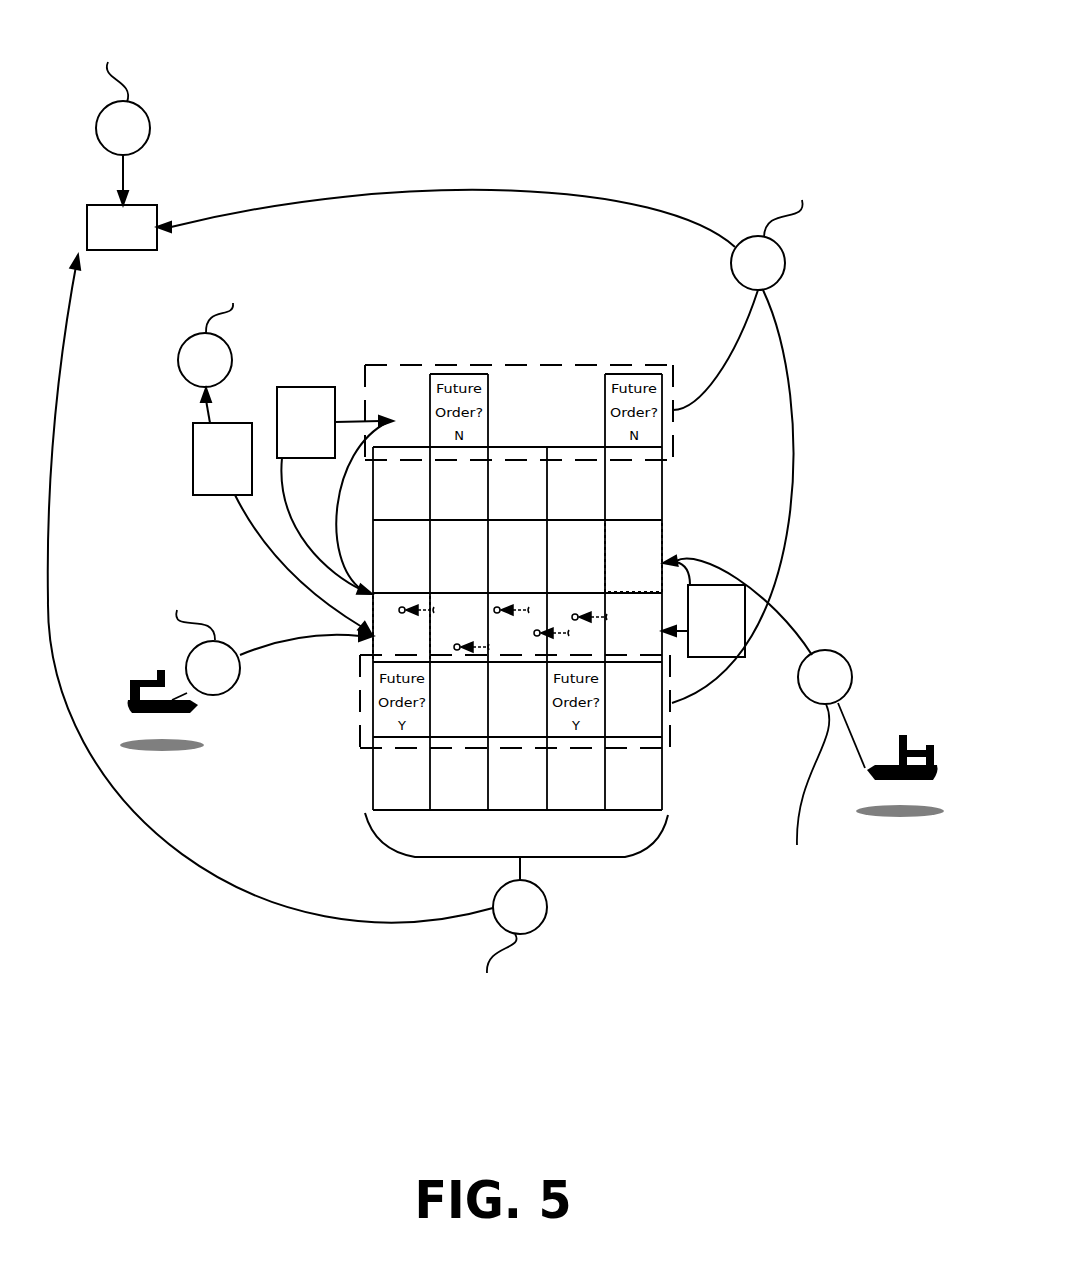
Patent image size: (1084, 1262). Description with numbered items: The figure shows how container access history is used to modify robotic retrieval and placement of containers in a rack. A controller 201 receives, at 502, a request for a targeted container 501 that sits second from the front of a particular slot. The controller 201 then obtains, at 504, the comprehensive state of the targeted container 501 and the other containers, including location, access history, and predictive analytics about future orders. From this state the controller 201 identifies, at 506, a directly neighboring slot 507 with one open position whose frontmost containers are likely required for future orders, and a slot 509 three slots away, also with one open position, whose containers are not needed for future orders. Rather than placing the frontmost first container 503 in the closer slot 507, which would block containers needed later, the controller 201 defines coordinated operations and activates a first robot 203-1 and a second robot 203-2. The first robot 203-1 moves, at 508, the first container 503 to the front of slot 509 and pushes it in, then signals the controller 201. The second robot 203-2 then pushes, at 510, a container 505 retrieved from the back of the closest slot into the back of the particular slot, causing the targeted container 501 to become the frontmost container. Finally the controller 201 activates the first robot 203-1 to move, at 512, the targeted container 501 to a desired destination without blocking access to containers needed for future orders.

The controller 201 is at (122, 227).
The targeted container 501 is at (335, 531).
The request receiving step 502 is at (118, 86).
The first container 503 is at (353, 524).
The state obtaining step 504 is at (490, 940).
The pushing container 505 is at (675, 588).
The slot identification and analysis step 506 is at (800, 223).
The directly neighboring slot 507 is at (360, 765).
The first container moving step 508 is at (171, 621).
The distant slot 509 is at (673, 365).
The container pushing step 510 is at (803, 783).
The targeted container moving step 512 is at (249, 324).
The first robot 203-1 is at (162, 710).
The second robot 203-2 is at (900, 776).